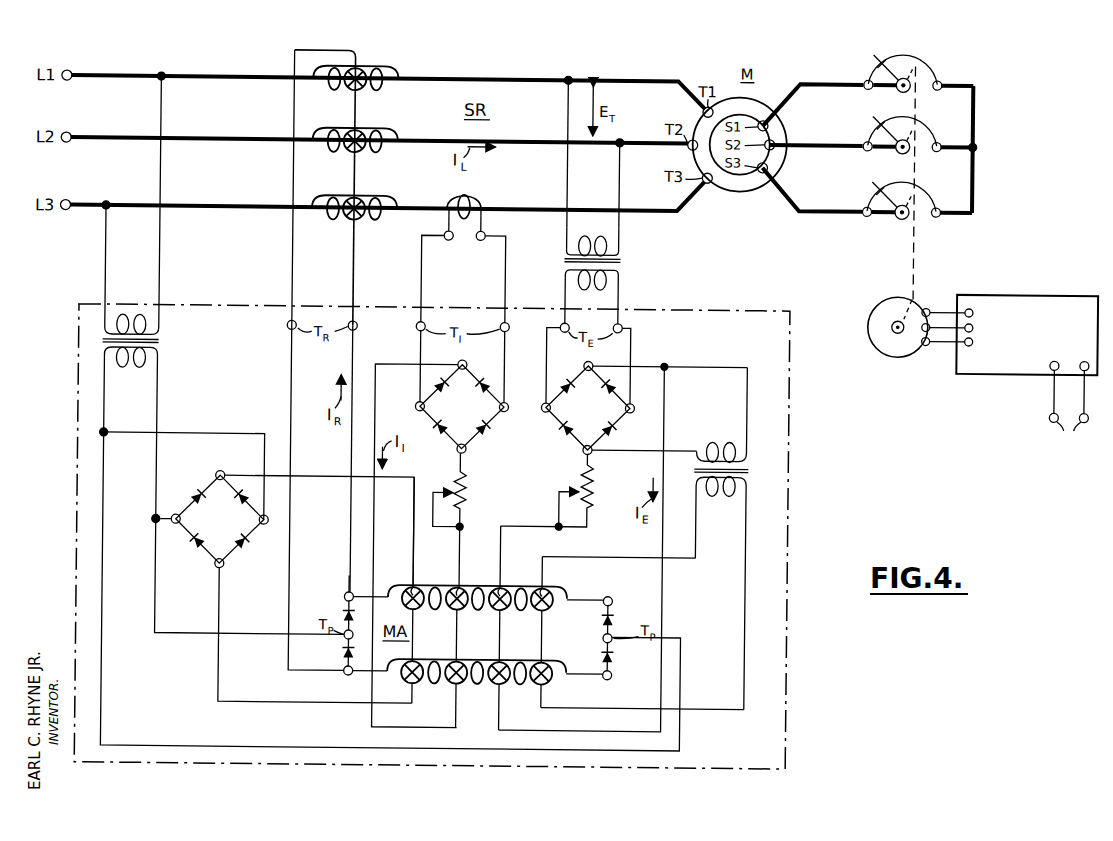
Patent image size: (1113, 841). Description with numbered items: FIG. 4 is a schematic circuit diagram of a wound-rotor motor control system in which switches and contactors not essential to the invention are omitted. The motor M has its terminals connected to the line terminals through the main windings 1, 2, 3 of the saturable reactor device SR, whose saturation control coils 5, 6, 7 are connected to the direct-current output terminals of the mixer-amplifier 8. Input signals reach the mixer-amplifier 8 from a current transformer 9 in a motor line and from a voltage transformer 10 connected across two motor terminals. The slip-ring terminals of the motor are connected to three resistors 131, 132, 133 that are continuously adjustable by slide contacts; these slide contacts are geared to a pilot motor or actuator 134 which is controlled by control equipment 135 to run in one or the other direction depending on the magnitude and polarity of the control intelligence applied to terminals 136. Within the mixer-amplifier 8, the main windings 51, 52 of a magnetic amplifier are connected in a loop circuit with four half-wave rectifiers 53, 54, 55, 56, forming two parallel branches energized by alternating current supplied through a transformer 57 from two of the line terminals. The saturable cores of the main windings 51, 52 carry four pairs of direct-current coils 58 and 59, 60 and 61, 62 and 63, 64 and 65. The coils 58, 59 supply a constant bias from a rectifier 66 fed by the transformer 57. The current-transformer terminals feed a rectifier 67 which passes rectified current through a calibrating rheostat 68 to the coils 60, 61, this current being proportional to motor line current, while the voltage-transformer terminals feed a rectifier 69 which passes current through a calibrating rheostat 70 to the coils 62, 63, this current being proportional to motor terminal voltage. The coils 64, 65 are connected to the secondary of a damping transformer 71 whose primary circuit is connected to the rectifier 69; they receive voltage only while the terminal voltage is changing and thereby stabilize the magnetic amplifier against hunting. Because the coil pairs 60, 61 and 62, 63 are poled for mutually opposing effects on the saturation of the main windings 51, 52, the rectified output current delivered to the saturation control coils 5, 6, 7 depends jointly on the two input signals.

The main winding 1 is at (392, 74).
The main winding 2 is at (392, 137).
The main winding 3 is at (392, 200).
The saturation control coil 5 is at (358, 58).
The saturation control coil 6 is at (358, 125).
The saturation control coil 7 is at (358, 190).
The mixer-amplifier 8 is at (443, 537).
The current transformer 9 is at (477, 201).
The voltage transformer 10 is at (618, 258).
The main winding 51 is at (394, 587).
The main winding 52 is at (566, 664).
The half-wave rectifier 53 is at (344, 611).
The half-wave rectifier 54 is at (341, 654).
The half-wave rectifier 55 is at (617, 613).
The half-wave rectifier 56 is at (616, 656).
The transformer 57 is at (160, 341).
The direct-current coil 58 is at (418, 580).
The direct-current coil 59 is at (418, 702).
The direct-current coil 60 is at (462, 580).
The direct-current coil 61 is at (462, 703).
The direct-current coil 62 is at (506, 580).
The direct-current coil 63 is at (506, 703).
The direct-current coil 64 is at (558, 581).
The direct-current coil 65 is at (558, 688).
The rectifier 66 is at (211, 529).
The rectifier 67 is at (452, 414).
The calibrating rheostat 68 is at (468, 494).
The rectifier 69 is at (578, 414).
The calibrating rheostat 70 is at (594, 492).
The damping transformer 71 is at (748, 468).
The resistor 131 is at (928, 58).
The resistor 132 is at (928, 118).
The resistor 133 is at (928, 186).
The pilot motor or actuator 134 is at (886, 342).
The control equipment 135 is at (1049, 288).
The terminals 136 is at (1069, 411).